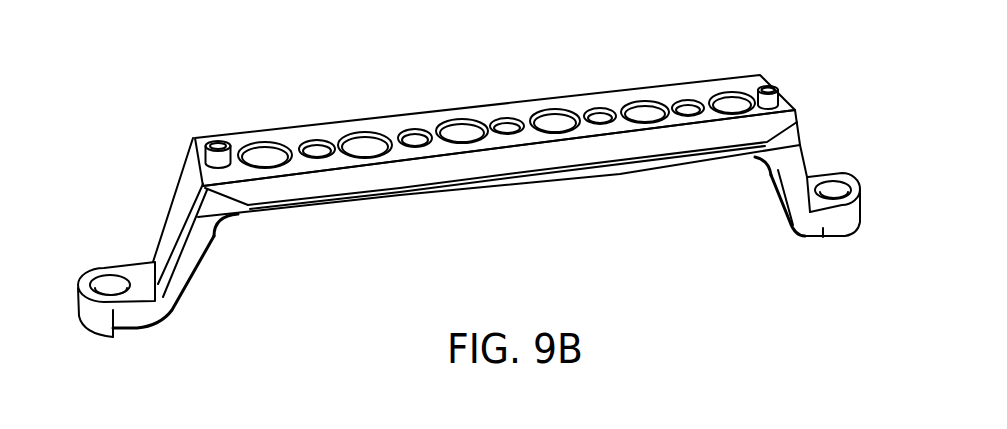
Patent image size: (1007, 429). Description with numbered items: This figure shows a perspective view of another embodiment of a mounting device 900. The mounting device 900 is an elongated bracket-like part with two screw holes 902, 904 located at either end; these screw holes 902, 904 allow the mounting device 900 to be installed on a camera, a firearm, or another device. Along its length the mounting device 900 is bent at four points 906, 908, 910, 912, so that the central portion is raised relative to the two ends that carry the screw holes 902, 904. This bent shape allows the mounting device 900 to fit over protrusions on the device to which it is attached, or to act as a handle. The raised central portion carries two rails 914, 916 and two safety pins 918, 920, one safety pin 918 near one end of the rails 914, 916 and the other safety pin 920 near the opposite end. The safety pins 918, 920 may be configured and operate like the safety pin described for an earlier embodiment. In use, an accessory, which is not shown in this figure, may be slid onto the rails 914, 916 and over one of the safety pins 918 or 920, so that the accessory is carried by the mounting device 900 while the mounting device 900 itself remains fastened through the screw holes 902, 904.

The mounting device 900 is at (476, 205).
The screw hole 902 is at (110, 286).
The screw hole 904 is at (826, 178).
The bend point 906 is at (178, 327).
The bend point 908 is at (224, 236).
The bend point 910 is at (757, 157).
The bend point 912 is at (793, 228).
The rail 914 is at (242, 128).
The rail 916 is at (575, 152).
The safety pin 918 is at (215, 141).
The safety pin 920 is at (772, 85).